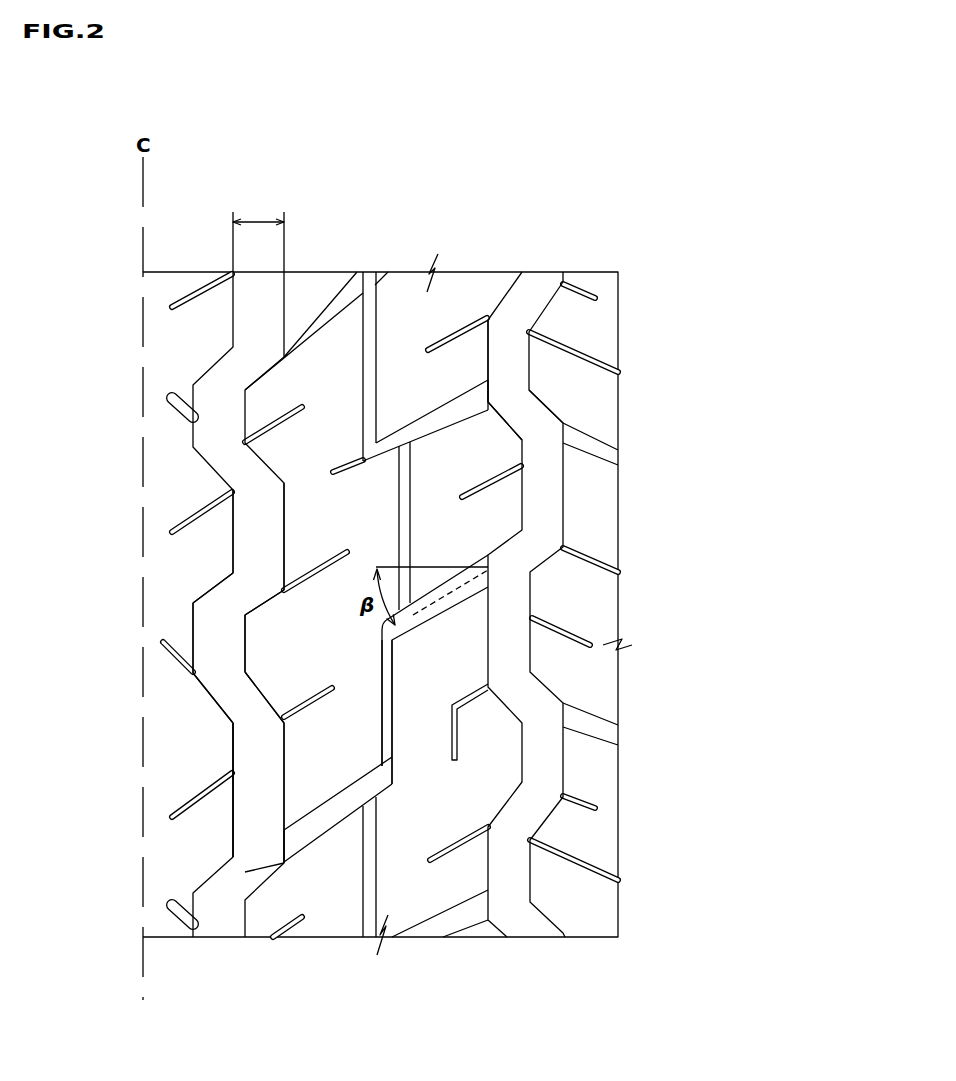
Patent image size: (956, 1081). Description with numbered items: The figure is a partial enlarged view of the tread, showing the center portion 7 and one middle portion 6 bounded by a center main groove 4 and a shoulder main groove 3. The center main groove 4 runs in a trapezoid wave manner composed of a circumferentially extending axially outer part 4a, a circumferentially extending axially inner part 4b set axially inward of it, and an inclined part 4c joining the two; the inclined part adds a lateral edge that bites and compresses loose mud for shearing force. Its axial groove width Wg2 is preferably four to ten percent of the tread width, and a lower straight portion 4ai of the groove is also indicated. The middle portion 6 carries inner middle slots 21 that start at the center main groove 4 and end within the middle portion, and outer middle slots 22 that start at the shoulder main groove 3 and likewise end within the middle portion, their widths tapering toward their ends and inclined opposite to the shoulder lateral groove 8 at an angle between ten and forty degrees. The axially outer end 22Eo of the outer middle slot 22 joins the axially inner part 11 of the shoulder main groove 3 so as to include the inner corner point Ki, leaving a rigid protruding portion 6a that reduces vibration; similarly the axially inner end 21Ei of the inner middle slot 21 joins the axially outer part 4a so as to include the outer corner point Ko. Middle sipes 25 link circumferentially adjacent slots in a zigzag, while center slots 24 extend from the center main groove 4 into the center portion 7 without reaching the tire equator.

The shoulder main groove 3 is at (540, 288).
The center main groove 4 is at (258, 304).
The axially outer part 4a is at (243, 531).
The inner straight portion of groove 4 4ai is at (282, 802).
The axially inner part 4b is at (205, 633).
The inclined part 4c is at (220, 593).
The middle portion 6 is at (487, 985).
The protruding portion 6a is at (498, 446).
The center portion 7 is at (167, 940).
The shoulder lateral groove 8 is at (595, 432).
The axially inner part 11 is at (485, 368).
The inner middle slot 21 is at (317, 840).
The axially inner end 21Ei is at (284, 755).
The outer middle slot 22 is at (425, 407).
The axially outer end 22Eo is at (493, 393).
The center slot 24 is at (183, 410).
The middle sipe 25 is at (410, 543).
The inner corner point Ki is at (483, 428).
The outer corner point Ko is at (567, 415).
The axial groove width Wg2 is at (259, 231).